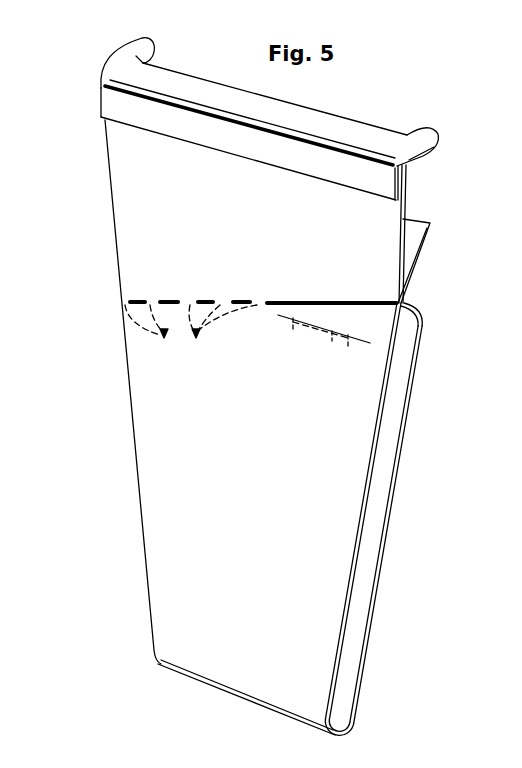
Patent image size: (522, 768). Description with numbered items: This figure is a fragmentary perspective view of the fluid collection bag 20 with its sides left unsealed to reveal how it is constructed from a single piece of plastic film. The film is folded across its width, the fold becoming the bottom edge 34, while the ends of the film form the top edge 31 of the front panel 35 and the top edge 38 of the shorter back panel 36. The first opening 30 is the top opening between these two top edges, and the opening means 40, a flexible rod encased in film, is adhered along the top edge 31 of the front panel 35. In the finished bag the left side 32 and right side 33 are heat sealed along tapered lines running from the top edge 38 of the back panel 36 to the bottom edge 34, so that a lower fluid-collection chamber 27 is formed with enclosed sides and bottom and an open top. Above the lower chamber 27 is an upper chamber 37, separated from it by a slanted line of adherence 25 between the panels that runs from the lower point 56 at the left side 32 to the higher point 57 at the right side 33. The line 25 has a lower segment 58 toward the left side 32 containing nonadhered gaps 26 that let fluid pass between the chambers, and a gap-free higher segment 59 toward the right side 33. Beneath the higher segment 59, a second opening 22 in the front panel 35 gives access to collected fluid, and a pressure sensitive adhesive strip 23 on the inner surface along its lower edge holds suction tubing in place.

The fluid collection bag 20 is at (180, 427).
The second opening 22 is at (282, 318).
The pressure sensitive adhesive strip 23 is at (331, 340).
The line of adherence 25 is at (297, 300).
The nonadhered gaps 26 is at (191, 332).
The lower fluid-collection chamber 27 is at (349, 708).
The first opening 30 is at (212, 64).
The top edge of front panel 31 is at (410, 168).
The left side 32 is at (110, 466).
The right side 33 is at (407, 518).
The bottom edge 34 is at (237, 699).
The front panel 35 is at (180, 427).
The back panel 36 is at (383, 450).
The upper chamber 37 is at (424, 248).
The top edge of back panel 38 is at (417, 218).
The opening means 40 is at (357, 131).
The lower point of line of adherence 56 is at (117, 303).
The higher point of line of adherence 57 is at (406, 303).
The lower segment of line of adherence 58 is at (177, 293).
The higher segment of line of adherence 59 is at (340, 300).